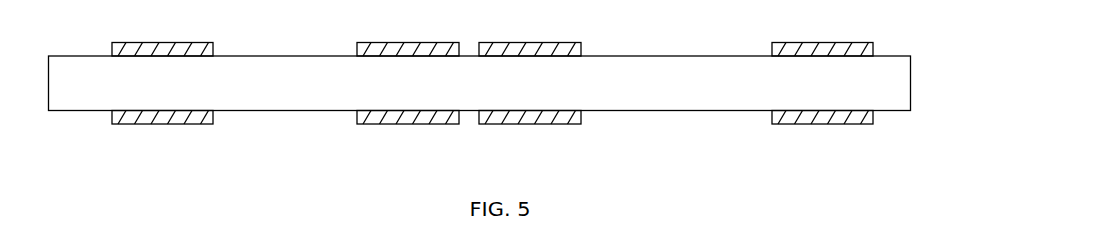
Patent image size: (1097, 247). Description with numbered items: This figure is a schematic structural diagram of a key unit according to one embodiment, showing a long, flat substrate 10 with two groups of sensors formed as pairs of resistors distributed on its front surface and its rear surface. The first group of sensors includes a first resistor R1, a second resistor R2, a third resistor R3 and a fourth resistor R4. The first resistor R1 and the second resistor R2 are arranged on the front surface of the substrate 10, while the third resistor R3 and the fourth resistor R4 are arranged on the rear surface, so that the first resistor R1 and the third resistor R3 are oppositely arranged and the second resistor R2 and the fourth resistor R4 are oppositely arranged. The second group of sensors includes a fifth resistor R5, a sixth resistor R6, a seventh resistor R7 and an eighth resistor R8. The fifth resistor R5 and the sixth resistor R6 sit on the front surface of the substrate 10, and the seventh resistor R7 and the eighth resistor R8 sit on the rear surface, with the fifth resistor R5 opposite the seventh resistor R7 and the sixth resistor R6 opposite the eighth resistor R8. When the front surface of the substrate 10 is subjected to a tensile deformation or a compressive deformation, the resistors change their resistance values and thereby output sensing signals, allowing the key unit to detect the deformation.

The substrate 10 is at (911, 78).
The first resistor R1 is at (408, 38).
The second resistor R2 is at (530, 38).
The third resistor R3 is at (408, 132).
The fourth resistor R4 is at (530, 132).
The fifth resistor R5 is at (162, 38).
The sixth resistor R6 is at (822, 38).
The seventh resistor R7 is at (162, 132).
The eighth resistor R8 is at (822, 132).